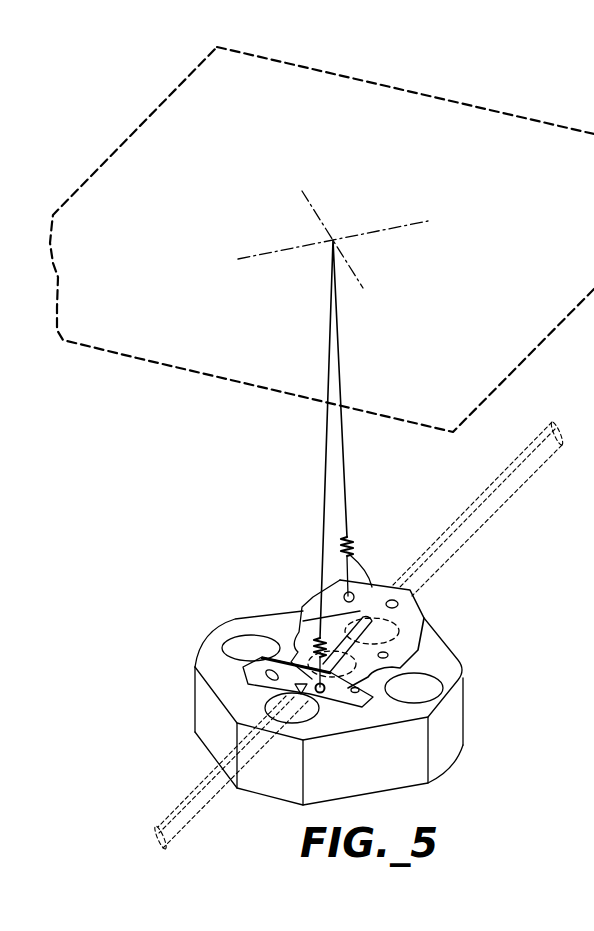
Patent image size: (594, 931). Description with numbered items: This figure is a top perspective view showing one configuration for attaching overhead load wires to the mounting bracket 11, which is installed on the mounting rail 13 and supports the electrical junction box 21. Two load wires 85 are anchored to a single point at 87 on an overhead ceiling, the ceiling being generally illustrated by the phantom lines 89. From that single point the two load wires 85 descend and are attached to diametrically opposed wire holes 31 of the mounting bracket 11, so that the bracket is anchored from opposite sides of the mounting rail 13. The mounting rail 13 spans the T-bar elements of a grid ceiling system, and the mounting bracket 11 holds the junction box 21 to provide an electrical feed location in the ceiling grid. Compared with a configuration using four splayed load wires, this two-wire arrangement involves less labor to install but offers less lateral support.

The mounting bracket 11 is at (408, 613).
The mounting rail 13 is at (472, 533).
The electrical junction box 21 is at (425, 658).
The wire holes 31 is at (353, 596).
The load wires 85 is at (333, 484).
The single anchoring point 87 is at (334, 238).
The phantom lines 89 is at (507, 382).